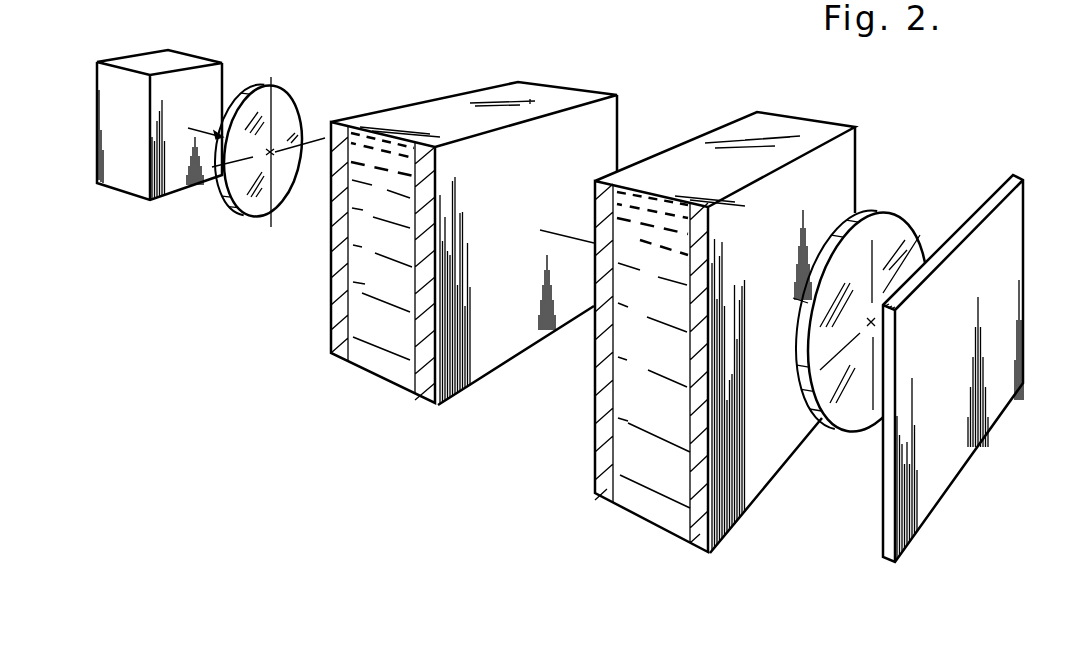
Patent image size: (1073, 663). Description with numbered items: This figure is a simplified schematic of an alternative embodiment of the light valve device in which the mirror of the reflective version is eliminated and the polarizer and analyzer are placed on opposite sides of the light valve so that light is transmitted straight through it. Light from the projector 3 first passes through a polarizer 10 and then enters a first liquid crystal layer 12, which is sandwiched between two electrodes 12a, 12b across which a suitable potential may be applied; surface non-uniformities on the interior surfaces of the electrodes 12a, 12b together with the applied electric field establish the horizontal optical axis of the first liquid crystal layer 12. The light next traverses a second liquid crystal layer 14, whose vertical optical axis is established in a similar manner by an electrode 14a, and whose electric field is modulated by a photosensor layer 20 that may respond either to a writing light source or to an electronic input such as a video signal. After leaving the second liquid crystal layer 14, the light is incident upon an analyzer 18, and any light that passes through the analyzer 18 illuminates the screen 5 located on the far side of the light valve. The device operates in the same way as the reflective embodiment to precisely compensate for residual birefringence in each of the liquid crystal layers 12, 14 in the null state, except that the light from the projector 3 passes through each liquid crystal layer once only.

The projector 3 is at (96, 61).
The polarizer 10 is at (282, 88).
The first liquid crystal layer 12 is at (383, 378).
The electrode 12a is at (431, 405).
The electrode 12b is at (333, 352).
The second liquid crystal layer 14 is at (657, 513).
The electrode 14a is at (597, 495).
The photosensor layer 20 is at (705, 548).
The analyzer 18 is at (840, 434).
The screen 5 is at (883, 557).